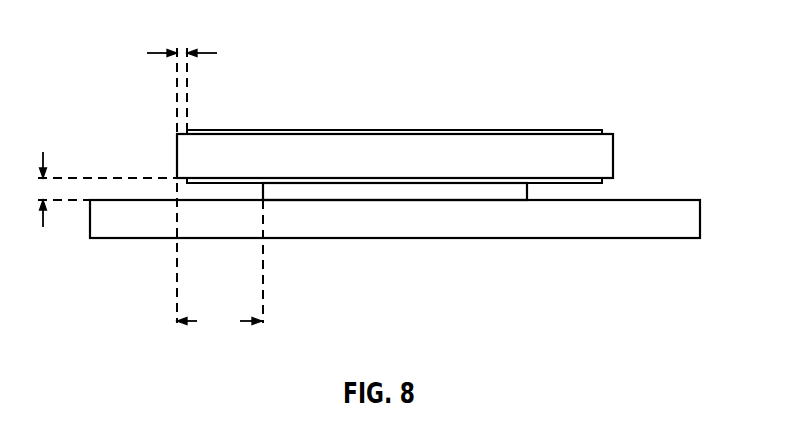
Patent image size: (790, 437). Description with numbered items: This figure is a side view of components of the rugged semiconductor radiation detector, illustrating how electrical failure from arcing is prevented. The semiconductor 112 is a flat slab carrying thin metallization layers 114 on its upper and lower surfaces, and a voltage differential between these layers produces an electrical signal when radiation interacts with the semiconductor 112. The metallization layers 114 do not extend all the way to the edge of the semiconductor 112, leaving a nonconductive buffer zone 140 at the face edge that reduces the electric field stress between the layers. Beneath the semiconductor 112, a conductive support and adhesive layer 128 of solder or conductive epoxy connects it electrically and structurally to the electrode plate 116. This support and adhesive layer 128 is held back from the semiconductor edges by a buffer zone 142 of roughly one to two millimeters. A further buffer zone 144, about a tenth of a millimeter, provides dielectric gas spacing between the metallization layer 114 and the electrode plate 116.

The semiconductor 112 is at (618, 147).
The metallization layer 114 is at (534, 176).
The electrode plate 116 is at (683, 242).
The support and adhesive layer 128 is at (533, 193).
The nonconductive buffer zone 140 is at (170, 52).
The buffer zone 142 is at (219, 321).
The buffer zone 144 is at (45, 162).